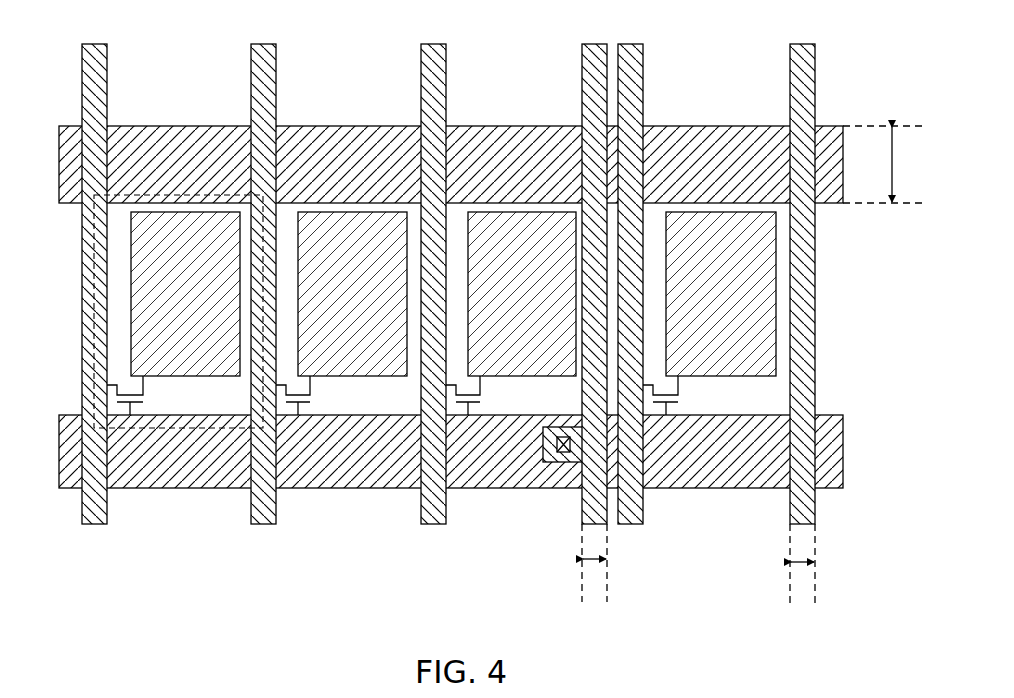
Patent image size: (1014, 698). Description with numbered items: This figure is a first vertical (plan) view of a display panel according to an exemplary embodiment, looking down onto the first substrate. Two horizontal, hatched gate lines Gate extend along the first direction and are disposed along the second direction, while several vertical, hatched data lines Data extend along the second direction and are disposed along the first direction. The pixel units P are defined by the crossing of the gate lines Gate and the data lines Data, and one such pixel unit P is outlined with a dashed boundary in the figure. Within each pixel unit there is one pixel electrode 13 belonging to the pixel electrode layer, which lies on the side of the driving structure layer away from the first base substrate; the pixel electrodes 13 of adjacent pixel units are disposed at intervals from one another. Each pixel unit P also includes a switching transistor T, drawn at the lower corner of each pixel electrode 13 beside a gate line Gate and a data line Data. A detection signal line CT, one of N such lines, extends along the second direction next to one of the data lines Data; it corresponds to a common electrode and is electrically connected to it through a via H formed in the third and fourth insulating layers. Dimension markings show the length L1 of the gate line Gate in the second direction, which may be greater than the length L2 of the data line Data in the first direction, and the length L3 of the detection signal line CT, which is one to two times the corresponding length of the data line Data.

The gate line Gate is at (427, 307).
The data line Data is at (448, 270).
The detection signal line CT is at (575, 270).
The pixel unit P is at (130, 197).
The pixel electrode 13 is at (140, 308).
The switching transistor T is at (118, 395).
The via H is at (543, 462).
The length of the gate line in the second direction L1 is at (885, 164).
The length of the data line in the first direction L2 is at (802, 563).
The length of the detection signal line in the second direction L3 is at (594, 563).